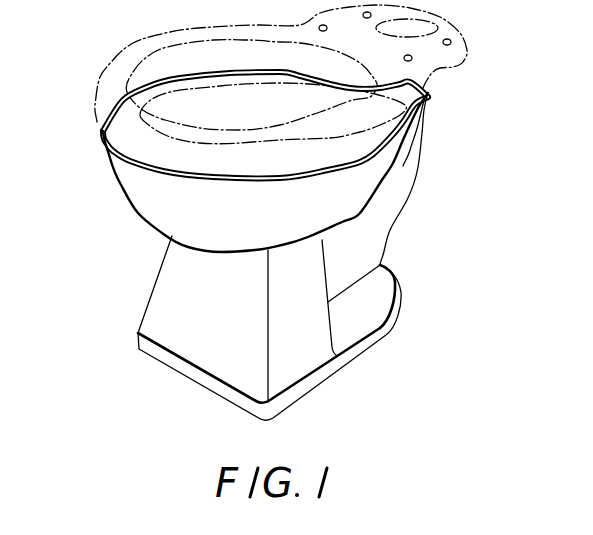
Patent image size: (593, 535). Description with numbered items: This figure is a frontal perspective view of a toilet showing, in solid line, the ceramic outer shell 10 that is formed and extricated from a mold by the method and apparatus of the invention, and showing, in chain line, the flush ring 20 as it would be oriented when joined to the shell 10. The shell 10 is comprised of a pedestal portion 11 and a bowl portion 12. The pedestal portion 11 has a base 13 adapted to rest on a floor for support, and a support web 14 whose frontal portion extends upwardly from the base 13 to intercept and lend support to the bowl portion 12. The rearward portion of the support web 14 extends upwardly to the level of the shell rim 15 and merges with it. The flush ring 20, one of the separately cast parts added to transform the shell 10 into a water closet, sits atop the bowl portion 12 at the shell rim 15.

The outer shell 10 is at (434, 178).
The pedestal portion 11 is at (202, 359).
The bowl portion 12 is at (128, 197).
The base 13 is at (330, 363).
The support web 14 is at (183, 278).
The shell rim 15 is at (341, 170).
The flush ring 20 is at (84, 112).